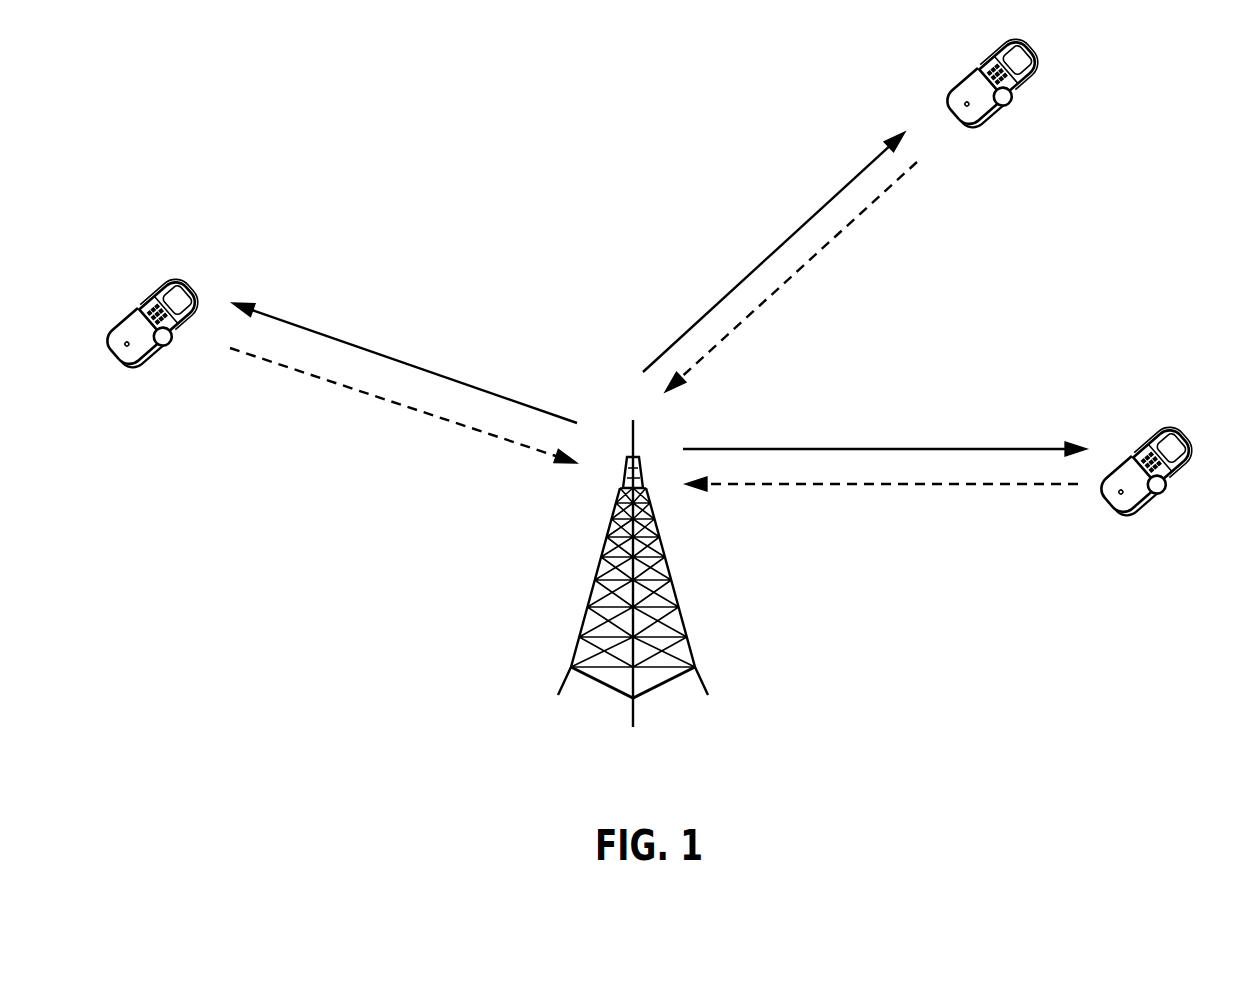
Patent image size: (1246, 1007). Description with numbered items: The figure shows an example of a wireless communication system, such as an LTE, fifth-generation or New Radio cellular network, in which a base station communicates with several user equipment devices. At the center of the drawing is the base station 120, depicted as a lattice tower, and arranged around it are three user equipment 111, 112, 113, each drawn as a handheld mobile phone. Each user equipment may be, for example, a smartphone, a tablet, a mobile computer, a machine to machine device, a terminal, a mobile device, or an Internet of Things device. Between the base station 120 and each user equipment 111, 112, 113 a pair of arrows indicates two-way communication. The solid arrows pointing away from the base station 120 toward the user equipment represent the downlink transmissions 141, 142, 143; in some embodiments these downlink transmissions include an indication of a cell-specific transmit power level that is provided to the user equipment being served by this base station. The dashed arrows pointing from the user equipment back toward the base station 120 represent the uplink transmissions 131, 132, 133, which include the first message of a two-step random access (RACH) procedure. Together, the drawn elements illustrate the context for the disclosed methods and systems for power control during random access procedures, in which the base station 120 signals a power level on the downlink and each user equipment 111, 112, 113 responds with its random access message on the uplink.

The user equipment 111 is at (165, 365).
The user equipment 112 is at (1157, 513).
The user equipment 113 is at (1005, 125).
The base station 120 is at (692, 648).
The downlink transmission 141 is at (337, 342).
The downlink transmission 142 is at (998, 447).
The downlink transmission 143 is at (823, 202).
The uplink transmission 131 is at (447, 420).
The uplink transmission 132 is at (847, 485).
The uplink transmission 133 is at (818, 250).